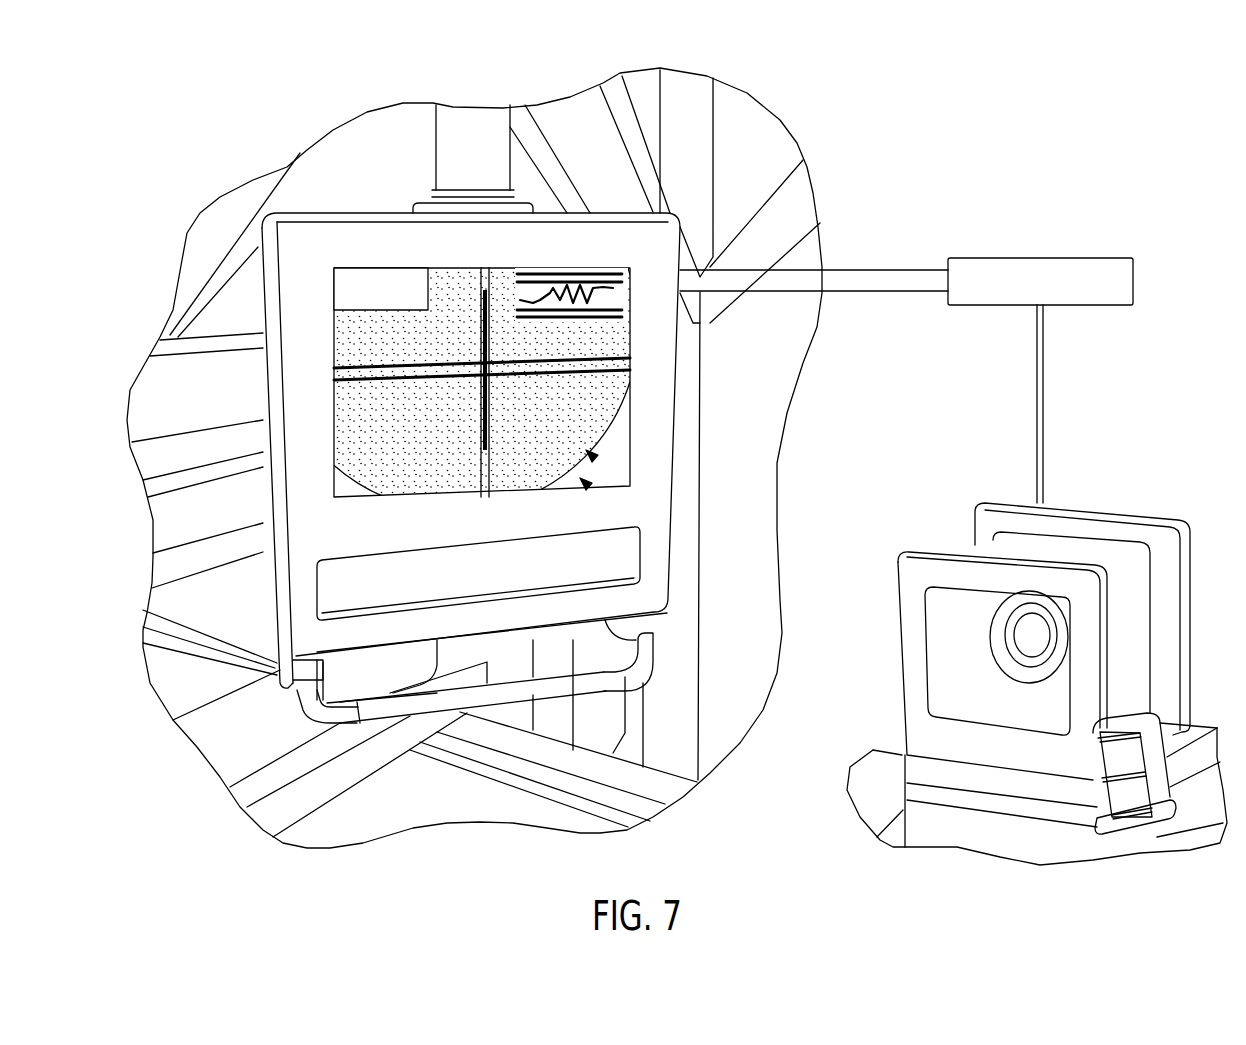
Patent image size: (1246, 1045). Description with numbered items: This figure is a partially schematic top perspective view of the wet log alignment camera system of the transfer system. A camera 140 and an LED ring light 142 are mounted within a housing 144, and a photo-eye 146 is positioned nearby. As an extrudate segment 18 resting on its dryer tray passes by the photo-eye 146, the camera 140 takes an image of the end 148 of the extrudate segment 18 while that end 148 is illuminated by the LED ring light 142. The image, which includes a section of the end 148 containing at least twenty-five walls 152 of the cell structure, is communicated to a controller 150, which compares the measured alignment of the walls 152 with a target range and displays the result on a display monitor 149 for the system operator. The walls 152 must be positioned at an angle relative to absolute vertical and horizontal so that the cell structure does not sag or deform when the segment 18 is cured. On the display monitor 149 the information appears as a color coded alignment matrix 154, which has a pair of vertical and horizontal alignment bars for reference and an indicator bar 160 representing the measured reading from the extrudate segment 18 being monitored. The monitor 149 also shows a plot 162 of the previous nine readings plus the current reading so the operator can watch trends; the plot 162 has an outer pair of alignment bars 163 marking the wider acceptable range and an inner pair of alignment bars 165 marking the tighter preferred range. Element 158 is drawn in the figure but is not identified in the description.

The extrudate segment 18 is at (596, 456).
The camera 140 is at (1030, 643).
The LED ring light 142 is at (990, 633).
The housing 144 is at (1097, 545).
The photo-eye 146 is at (1122, 760).
The end 148 is at (620, 330).
The display monitor 149 is at (668, 558).
The controller 150 is at (1135, 273).
The walls 152 is at (625, 360).
The alignment matrix 154 is at (526, 380).
The cursor bar 158 is at (505, 438).
The indicator bar 160 is at (490, 442).
The plot 162 is at (613, 290).
The outer pair of alignment bars 163 is at (555, 270).
The inner pair of alignment bars 165 is at (603, 285).